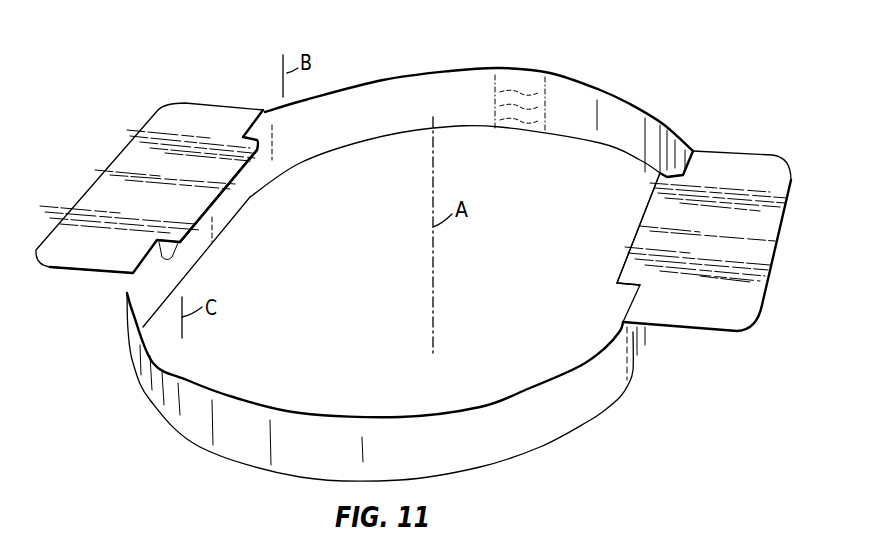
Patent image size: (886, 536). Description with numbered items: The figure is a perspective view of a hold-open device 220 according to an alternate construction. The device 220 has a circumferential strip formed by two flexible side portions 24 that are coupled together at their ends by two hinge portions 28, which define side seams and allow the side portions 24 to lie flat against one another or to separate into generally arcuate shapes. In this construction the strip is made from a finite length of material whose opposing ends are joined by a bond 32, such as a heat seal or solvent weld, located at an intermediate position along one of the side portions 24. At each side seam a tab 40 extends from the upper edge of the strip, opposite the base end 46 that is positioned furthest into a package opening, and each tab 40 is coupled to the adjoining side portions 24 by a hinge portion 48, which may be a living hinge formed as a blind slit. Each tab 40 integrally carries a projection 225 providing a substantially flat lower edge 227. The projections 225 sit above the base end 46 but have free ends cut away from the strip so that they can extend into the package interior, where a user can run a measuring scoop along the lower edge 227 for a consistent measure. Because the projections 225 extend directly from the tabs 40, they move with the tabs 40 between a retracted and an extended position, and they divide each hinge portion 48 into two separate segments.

The device 220 is at (105, 73).
The side portions 24 is at (380, 95).
The hinge portions 28 is at (118, 173).
The bond 32 is at (520, 84).
The tab 40 is at (177, 118).
The base end 46 is at (258, 205).
The hinge portion 48 is at (262, 115).
The projection 225 is at (262, 176).
The lower edge 227 is at (220, 203).